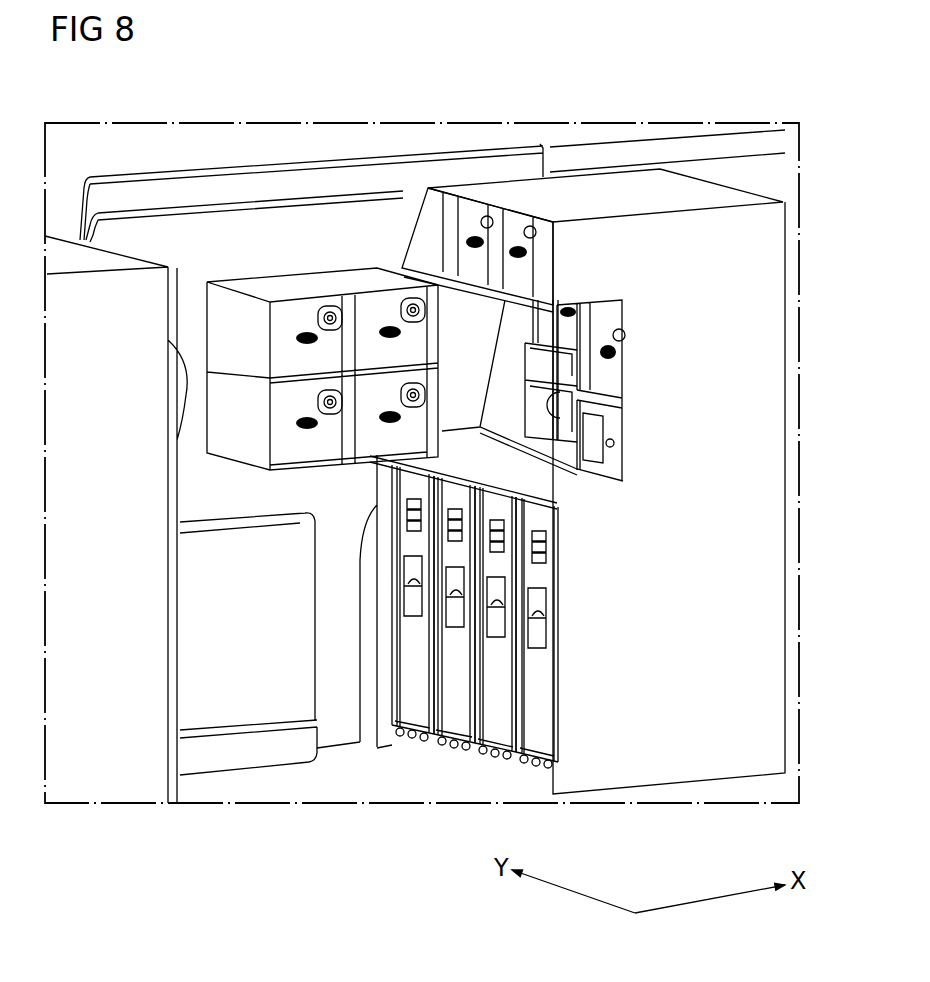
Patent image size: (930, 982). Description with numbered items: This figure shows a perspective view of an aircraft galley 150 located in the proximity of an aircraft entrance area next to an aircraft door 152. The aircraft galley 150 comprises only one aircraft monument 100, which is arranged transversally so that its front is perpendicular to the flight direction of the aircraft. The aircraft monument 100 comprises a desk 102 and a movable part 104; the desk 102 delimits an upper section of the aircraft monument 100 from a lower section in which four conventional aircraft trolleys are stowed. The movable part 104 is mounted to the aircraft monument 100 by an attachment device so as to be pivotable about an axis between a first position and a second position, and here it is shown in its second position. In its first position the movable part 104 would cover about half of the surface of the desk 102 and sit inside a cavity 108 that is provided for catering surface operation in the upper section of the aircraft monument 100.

The aircraft galley 150 is at (443, 100).
The aircraft monument 100 is at (638, 193).
The movable part 104 is at (280, 287).
The cavity 108 is at (600, 300).
The desk 102 is at (563, 473).
The aircraft door 152 is at (250, 603).